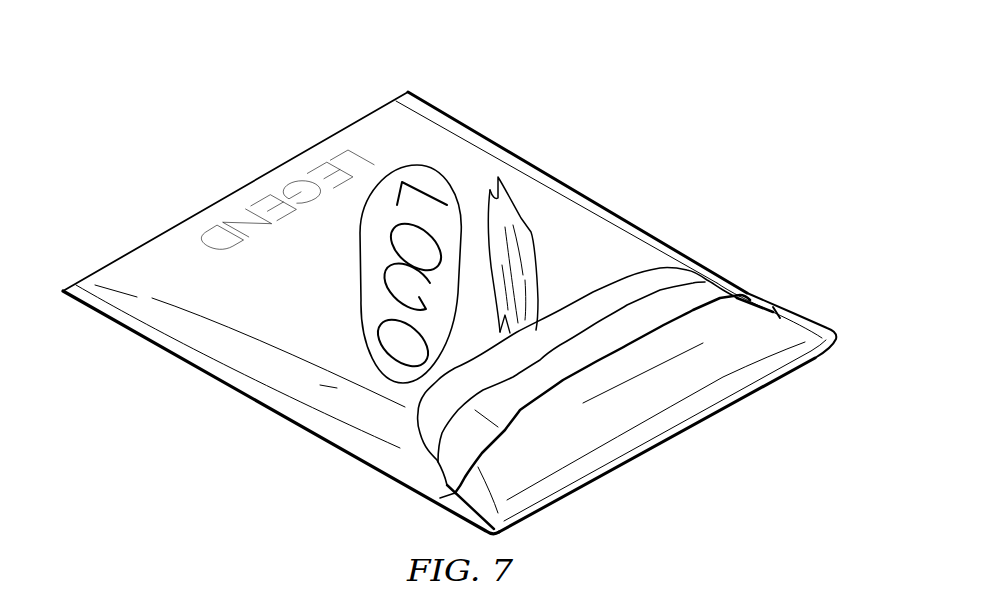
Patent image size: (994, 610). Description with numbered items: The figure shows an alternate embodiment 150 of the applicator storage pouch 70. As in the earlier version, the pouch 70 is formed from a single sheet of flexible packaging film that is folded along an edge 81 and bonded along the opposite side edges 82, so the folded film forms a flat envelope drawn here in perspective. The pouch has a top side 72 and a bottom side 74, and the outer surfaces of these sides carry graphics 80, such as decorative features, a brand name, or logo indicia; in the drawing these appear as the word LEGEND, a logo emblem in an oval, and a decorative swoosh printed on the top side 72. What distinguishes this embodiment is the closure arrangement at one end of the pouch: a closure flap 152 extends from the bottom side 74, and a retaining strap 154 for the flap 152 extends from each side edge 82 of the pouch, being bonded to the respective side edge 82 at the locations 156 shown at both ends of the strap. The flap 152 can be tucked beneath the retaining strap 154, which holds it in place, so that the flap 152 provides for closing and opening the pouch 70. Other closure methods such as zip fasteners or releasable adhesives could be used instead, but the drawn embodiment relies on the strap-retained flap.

The alternate embodiment of the applicator storage pouch 150 is at (261, 100).
The applicator storage pouch 70 is at (575, 186).
The top side 72 is at (273, 377).
The bottom side 74 is at (330, 472).
The graphics 80 is at (353, 149).
The edge 81 is at (167, 229).
The side edges 82 is at (648, 233).
The closure flap 152 is at (733, 365).
The retaining strap 154 is at (543, 382).
The locations 156 is at (762, 302).